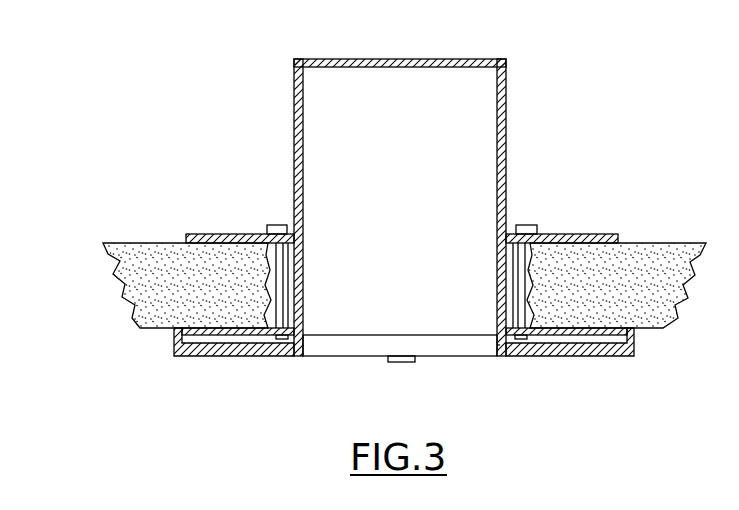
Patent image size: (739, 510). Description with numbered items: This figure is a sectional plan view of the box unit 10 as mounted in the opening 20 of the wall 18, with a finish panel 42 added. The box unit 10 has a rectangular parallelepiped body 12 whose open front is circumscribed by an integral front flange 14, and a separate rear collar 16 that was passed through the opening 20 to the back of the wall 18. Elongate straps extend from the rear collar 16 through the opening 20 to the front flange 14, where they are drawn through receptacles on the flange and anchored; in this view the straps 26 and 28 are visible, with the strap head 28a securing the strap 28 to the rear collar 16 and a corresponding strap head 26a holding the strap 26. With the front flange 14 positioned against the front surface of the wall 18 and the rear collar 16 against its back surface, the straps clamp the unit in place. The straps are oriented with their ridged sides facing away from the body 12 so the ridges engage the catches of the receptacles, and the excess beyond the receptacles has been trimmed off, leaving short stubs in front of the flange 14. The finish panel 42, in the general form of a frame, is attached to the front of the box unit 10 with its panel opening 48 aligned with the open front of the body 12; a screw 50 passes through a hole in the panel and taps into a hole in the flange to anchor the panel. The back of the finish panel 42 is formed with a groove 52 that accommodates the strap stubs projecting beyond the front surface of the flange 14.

The box unit 10 is at (240, 111).
The rectangular parallelepiped body 12 is at (506, 103).
The front flange 14 is at (575, 333).
The rear collar 16 is at (600, 234).
The wall 18 is at (163, 250).
The opening 20 is at (247, 302).
The strap 26 is at (283, 263).
The strap head 26a is at (269, 225).
The strap 28 is at (518, 285).
The strap head 28a is at (529, 225).
The finish panel 42 is at (332, 357).
The panel opening 48 is at (500, 345).
The screw 50 is at (397, 363).
The groove 52 is at (215, 341).